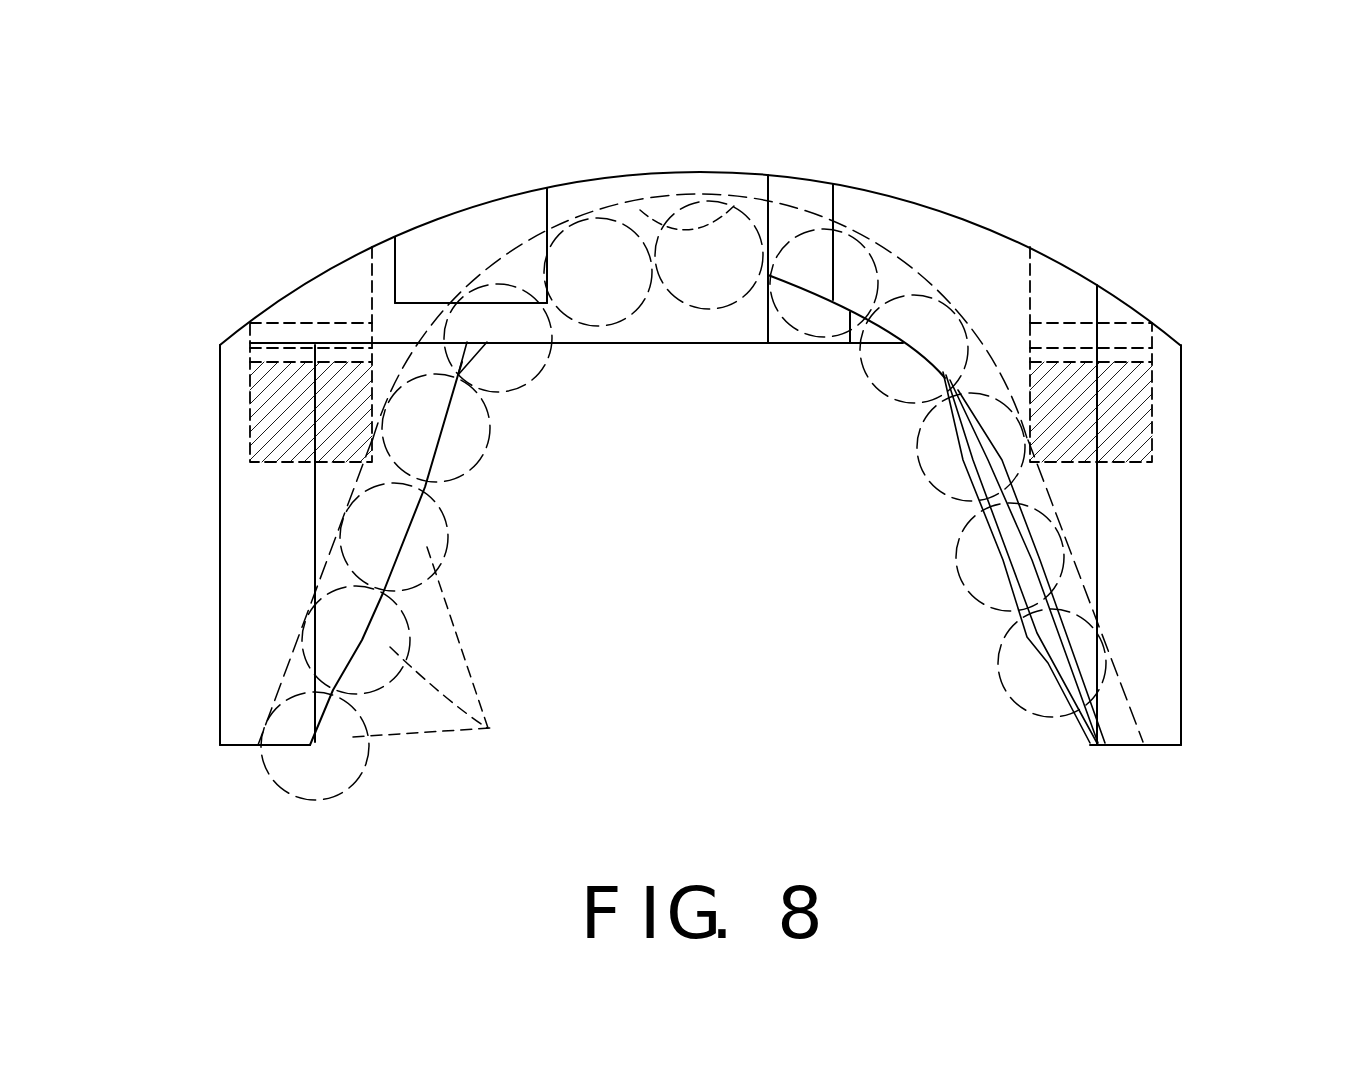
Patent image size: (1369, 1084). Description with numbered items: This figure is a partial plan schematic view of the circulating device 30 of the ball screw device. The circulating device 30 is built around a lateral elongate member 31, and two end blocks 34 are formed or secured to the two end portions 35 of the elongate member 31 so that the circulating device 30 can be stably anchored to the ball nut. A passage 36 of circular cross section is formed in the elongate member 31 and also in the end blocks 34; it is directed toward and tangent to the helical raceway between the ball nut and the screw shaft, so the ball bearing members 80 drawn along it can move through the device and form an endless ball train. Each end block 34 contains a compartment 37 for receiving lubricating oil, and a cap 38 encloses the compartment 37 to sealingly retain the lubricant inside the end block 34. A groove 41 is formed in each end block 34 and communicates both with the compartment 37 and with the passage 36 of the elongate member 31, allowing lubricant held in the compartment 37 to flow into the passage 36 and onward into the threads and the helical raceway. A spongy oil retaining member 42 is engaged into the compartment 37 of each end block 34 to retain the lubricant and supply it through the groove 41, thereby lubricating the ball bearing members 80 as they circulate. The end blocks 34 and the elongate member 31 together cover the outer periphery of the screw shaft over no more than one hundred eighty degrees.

The circulating device 30 is at (983, 227).
The elongate member 31 is at (810, 190).
The end block 34 is at (240, 653).
The end portion 35 is at (220, 397).
The passage 36 is at (732, 205).
The compartment 37 is at (1155, 393).
The cap 38 is at (307, 322).
The groove 41 is at (1030, 440).
The oil retaining member 42 is at (1128, 433).
The ball bearing member 80 is at (445, 666).